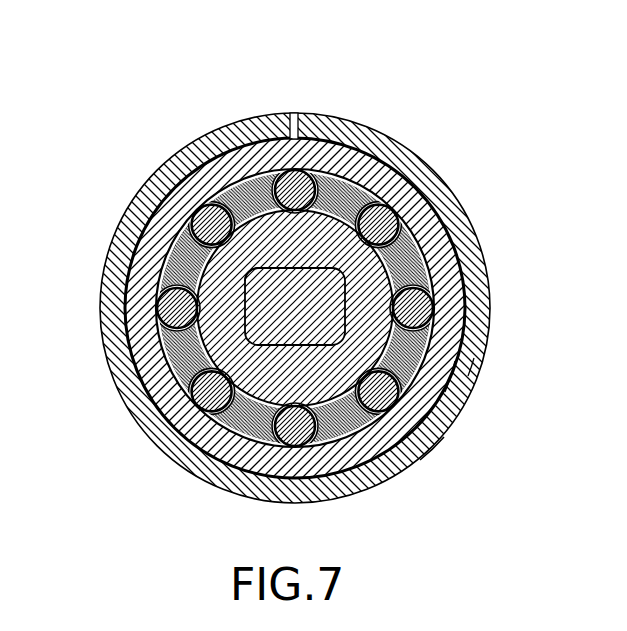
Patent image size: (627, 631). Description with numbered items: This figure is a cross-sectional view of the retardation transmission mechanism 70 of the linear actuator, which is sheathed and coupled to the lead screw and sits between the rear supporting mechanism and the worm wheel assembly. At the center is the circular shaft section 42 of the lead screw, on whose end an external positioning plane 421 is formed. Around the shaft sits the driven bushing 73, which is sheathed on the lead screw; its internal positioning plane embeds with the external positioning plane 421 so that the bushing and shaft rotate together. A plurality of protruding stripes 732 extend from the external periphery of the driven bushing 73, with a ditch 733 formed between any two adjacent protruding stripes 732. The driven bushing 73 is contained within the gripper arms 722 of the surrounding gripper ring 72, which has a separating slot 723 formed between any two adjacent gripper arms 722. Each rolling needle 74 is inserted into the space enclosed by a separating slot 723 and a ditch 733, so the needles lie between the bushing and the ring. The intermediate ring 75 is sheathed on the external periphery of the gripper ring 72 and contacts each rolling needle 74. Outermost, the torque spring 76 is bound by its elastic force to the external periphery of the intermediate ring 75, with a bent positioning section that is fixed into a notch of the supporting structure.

The retardation transmission mechanism 70 is at (321, 264).
The gripper ring 72 is at (321, 289).
The gripper arm 722 is at (444, 440).
The separating slot 723 is at (466, 359).
The driven bushing 73 is at (356, 302).
The protruding stripe 732 is at (452, 383).
The ditch 733 is at (432, 298).
The rolling needle 74 is at (433, 317).
The intermediate ring 75 is at (299, 308).
The torque spring 76 is at (352, 289).
The circular shaft section 42 is at (215, 308).
The external positioning plane 421 is at (268, 268).